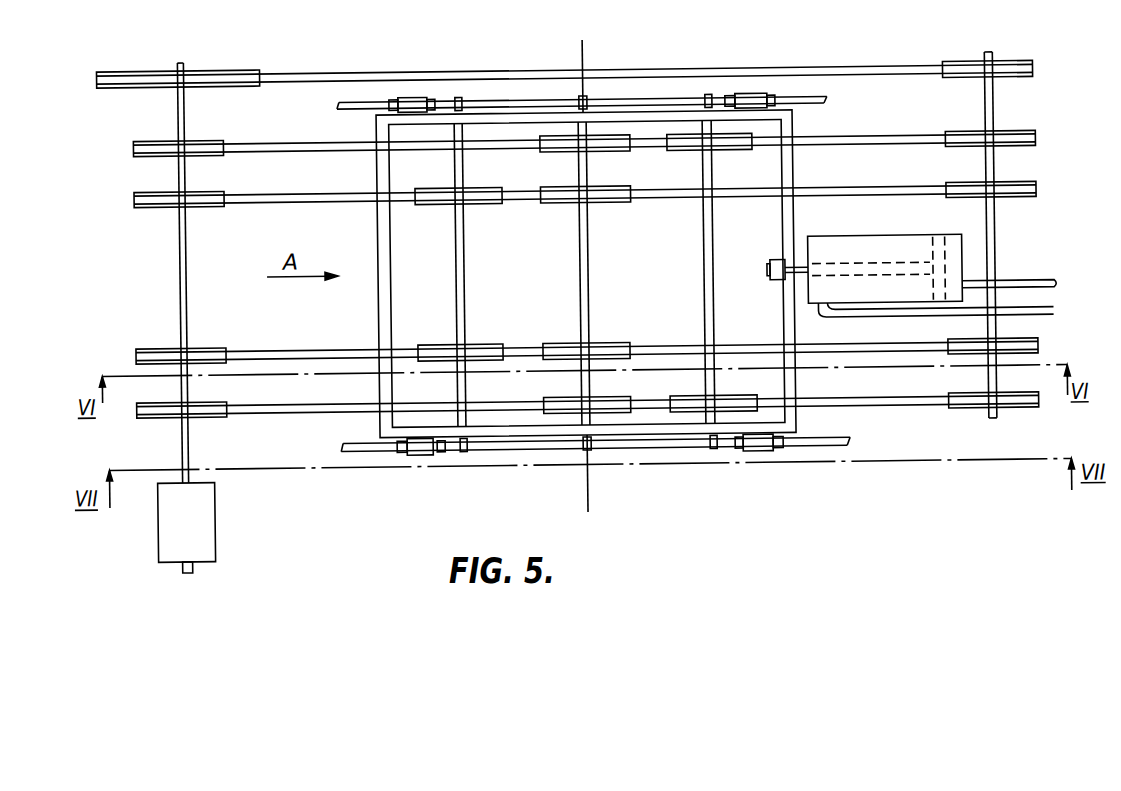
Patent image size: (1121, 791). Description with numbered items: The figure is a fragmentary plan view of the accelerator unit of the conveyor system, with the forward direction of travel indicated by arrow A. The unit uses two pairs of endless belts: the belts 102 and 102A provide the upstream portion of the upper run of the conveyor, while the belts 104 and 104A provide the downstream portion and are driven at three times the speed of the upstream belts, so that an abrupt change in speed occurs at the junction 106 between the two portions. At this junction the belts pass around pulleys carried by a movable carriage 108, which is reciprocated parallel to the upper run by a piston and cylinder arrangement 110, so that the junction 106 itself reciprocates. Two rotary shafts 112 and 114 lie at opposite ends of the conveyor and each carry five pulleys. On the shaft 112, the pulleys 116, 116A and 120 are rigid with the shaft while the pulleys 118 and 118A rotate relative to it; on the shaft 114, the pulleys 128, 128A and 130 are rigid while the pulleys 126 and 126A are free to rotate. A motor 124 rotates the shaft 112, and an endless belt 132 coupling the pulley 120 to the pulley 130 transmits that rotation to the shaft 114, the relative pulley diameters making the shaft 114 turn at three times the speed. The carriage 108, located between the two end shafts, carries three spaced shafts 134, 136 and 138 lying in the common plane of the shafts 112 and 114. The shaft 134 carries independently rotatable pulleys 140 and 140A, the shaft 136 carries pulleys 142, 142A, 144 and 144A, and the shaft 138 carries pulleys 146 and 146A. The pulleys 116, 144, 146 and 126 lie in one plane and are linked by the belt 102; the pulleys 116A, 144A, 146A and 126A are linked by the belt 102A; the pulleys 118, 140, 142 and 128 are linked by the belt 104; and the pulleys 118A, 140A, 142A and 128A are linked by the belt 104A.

The endless belt 102 is at (271, 409).
The endless belt 102A is at (325, 140).
The endless belt 104 is at (311, 347).
The endless belt 104A is at (325, 190).
The junction 106 is at (588, 50).
The movable carriage 108 is at (421, 455).
The piston and cylinder arrangement 110 is at (912, 239).
The rotary shaft 112 is at (187, 278).
The rotary shaft 114 is at (995, 227).
The pulley 116 is at (151, 412).
The pulley 116A is at (154, 136).
The pulley 118 is at (151, 344).
The pulley 118A is at (154, 187).
The pulley 120 is at (150, 66).
The motor 124 is at (203, 534).
The pulley 126 is at (1013, 412).
The pulley 126A is at (1014, 136).
The pulley 128 is at (1036, 351).
The pulley 128A is at (1014, 187).
The pulley 130 is at (1013, 66).
The endless belt 132 is at (781, 70).
The shaft 134 is at (464, 277).
The shaft 136 is at (588, 278).
The shaft 138 is at (738, 292).
The pulley 140 is at (482, 343).
The pulley 140A is at (474, 202).
The pulley 142 is at (602, 343).
The pulley 142A is at (600, 202).
The pulley 144 is at (598, 403).
The pulley 144A is at (602, 152).
The pulley 146 is at (720, 397).
The pulley 146A is at (714, 152).